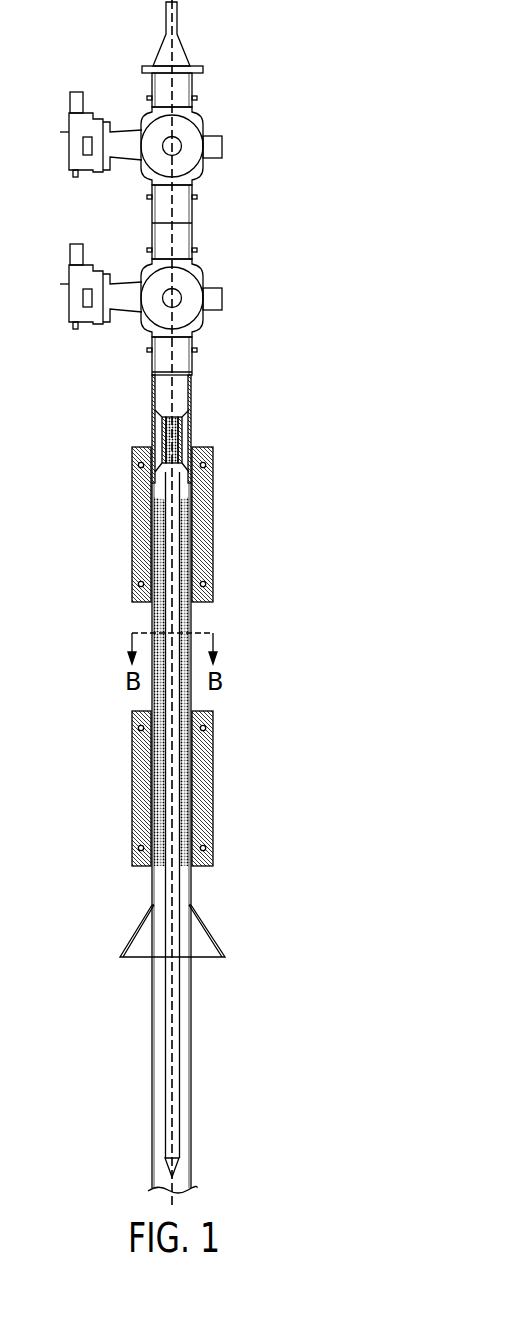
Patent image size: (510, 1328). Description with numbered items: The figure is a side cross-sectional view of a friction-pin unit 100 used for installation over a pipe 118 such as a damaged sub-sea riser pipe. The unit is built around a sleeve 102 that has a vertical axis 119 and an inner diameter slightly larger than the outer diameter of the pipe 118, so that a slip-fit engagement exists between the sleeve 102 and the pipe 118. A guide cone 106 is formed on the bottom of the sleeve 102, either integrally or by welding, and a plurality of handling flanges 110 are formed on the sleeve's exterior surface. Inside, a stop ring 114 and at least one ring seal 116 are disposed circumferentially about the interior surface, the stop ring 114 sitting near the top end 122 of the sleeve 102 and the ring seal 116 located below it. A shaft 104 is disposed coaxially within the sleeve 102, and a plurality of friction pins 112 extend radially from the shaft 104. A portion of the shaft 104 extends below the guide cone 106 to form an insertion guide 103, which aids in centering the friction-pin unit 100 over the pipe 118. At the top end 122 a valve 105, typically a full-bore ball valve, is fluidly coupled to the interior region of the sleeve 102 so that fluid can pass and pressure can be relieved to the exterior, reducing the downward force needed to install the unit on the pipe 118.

The friction-pin unit 100 is at (347, 61).
The sleeve 102 is at (192, 400).
The insertion guide 103 is at (178, 1077).
The shaft 104 is at (175, 478).
The valve 105 is at (222, 146).
The guide cone 106 is at (212, 933).
The handling flanges 110 is at (203, 525).
The friction pins 112 is at (183, 800).
The stop ring 114 is at (188, 483).
The ring seal 116 is at (188, 772).
The pipe 118 is at (153, 1065).
The vertical axis 119 is at (178, 214).
The top end 122 is at (192, 362).